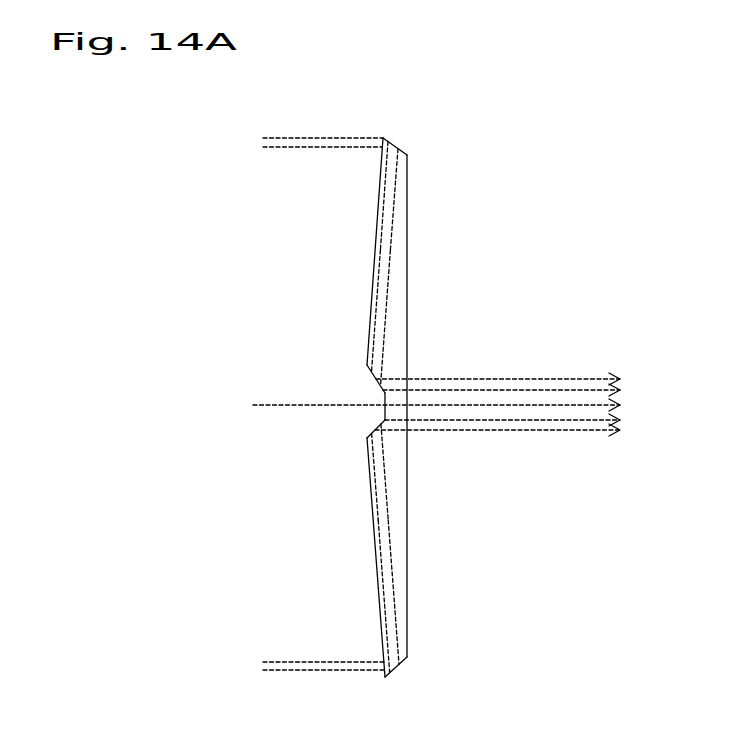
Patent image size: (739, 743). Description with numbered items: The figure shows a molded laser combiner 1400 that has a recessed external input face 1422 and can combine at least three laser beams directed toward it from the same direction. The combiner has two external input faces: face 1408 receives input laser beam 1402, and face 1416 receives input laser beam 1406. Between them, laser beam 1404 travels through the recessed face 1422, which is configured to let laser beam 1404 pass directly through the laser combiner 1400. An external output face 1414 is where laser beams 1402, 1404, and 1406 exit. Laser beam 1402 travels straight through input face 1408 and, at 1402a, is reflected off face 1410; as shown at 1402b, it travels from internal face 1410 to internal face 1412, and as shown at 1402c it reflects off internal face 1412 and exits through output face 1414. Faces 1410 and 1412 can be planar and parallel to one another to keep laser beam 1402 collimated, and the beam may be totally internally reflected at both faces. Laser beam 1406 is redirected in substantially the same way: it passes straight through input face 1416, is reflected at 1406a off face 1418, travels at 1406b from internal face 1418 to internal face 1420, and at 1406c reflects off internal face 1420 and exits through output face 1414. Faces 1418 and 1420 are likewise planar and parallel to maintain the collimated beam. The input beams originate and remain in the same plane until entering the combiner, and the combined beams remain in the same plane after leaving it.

The molded laser combiner 1400 is at (487, 90).
The input laser beam 1402 is at (272, 153).
The reflection of laser beam 1402 off face 1410 1402a is at (388, 140).
The travel of laser beam 1402 from face 1410 to face 1412 1402b is at (373, 303).
The reflection of laser beam 1402 off face 1412 and exit 1402c is at (522, 378).
The laser beam 1404 is at (272, 415).
The input laser beam 1406 is at (300, 688).
The reflection of laser beam 1406 off face 1418 1406a is at (415, 673).
The travel of laser beam 1406 from face 1418 to face 1420 1406b is at (388, 493).
The reflection of laser beam 1406 off face 1420 and exit 1406c is at (522, 430).
The external input face 1408 is at (377, 247).
The internal face 1410 is at (393, 143).
The internal face 1412 is at (376, 382).
The external output face 1414 is at (440, 260).
The external input face 1416 is at (377, 562).
The internal face 1418 is at (423, 682).
The internal face 1420 is at (376, 431).
The recessed external input face 1422 is at (385, 398).